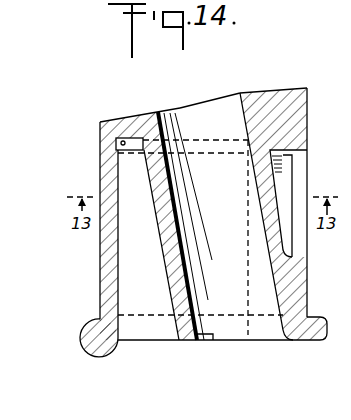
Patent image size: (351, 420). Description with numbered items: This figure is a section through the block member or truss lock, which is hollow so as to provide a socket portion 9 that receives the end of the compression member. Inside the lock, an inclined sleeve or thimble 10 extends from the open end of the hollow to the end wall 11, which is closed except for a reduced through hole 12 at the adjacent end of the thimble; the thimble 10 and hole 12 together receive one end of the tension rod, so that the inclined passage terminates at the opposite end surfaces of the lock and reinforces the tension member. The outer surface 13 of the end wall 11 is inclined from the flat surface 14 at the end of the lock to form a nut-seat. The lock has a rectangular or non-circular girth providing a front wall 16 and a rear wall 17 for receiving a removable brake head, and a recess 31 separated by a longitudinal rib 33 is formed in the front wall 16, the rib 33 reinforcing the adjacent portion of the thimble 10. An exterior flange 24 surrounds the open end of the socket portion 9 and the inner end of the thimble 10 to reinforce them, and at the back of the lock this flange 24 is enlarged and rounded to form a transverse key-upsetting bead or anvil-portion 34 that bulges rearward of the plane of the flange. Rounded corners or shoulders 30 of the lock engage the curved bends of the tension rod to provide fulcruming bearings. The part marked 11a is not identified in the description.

The socket portion 9 is at (142, 300).
The inclined sleeve or thimble 10 is at (167, 258).
The end wall 11 is at (143, 121).
The slot 11a is at (123, 140).
The reduced through hole 12 is at (203, 110).
The outer surface of the end wall 13 is at (260, 86).
The flat surface 14 is at (296, 88).
The front wall 16 is at (302, 272).
The rear wall 17 is at (104, 258).
The exterior flange 24 is at (313, 316).
The rounded corners or shoulders 30 is at (282, 334).
The recess 31 is at (288, 182).
The longitudinal rib 33 is at (292, 159).
The key-upsetting bead or anvil-portion 34 is at (90, 342).